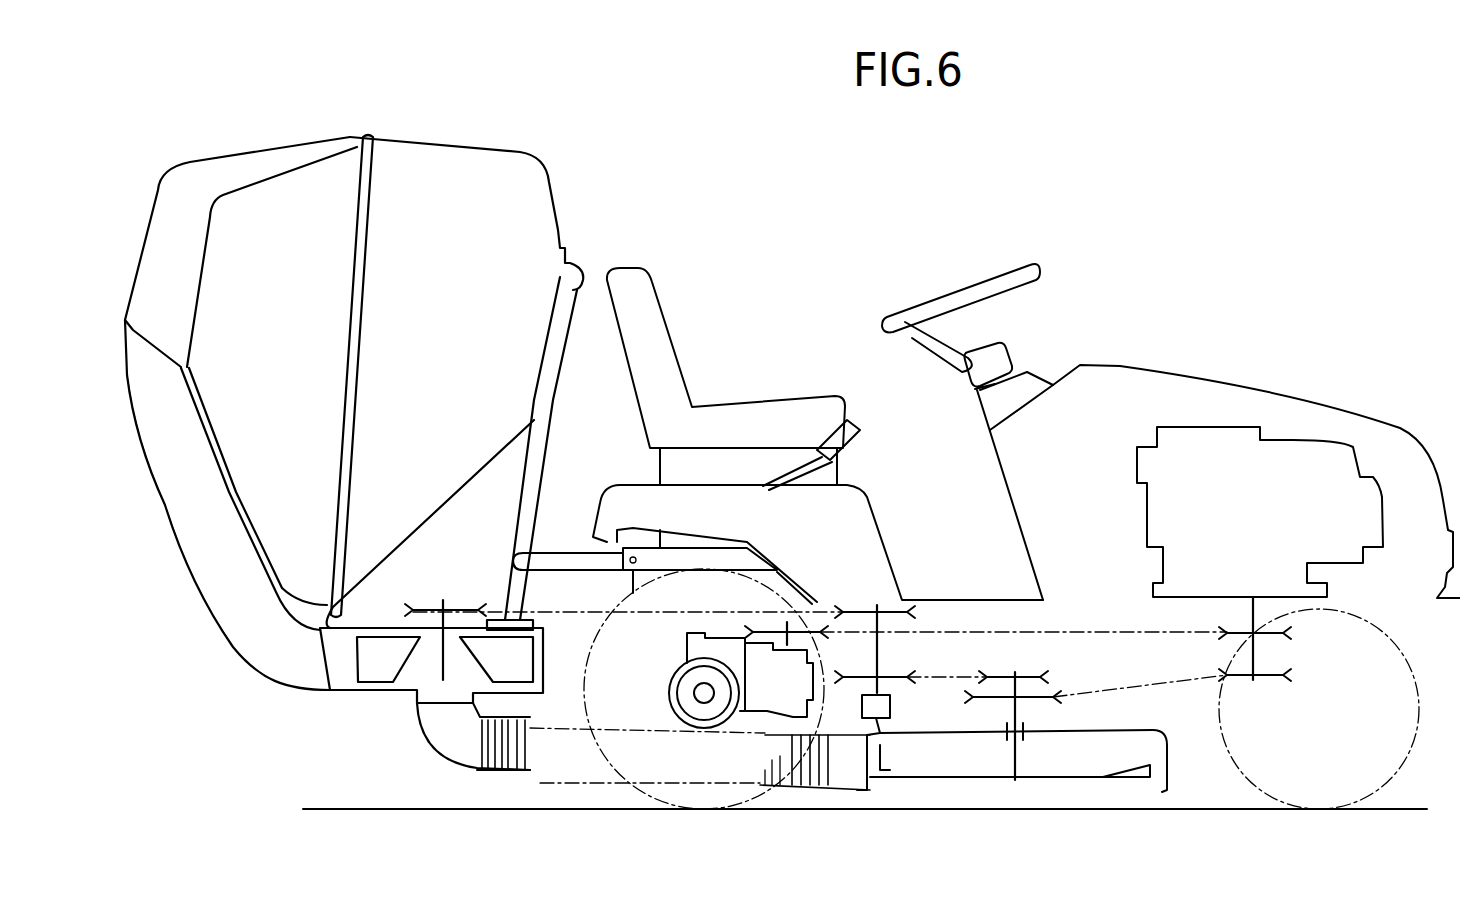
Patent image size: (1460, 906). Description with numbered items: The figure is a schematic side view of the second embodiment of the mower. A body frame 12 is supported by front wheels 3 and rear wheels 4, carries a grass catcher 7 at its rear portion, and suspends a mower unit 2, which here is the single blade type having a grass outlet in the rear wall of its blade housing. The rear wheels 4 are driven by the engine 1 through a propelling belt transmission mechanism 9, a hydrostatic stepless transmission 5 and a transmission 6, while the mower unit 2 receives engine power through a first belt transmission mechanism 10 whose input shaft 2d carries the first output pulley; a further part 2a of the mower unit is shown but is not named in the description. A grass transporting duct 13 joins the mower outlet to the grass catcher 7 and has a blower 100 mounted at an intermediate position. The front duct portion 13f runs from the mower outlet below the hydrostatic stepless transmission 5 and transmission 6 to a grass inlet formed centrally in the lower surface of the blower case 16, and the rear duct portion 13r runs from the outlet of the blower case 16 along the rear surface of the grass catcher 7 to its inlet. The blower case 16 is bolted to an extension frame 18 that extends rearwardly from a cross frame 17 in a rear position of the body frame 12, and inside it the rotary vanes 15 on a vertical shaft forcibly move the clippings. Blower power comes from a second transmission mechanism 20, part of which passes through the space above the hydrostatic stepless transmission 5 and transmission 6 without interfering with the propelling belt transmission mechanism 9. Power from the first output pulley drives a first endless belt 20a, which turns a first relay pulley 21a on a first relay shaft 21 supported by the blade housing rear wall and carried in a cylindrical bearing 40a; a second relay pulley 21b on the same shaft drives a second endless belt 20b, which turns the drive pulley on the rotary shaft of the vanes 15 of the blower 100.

The engine 1 is at (1307, 450).
The mower unit 2 is at (1087, 796).
The frame cross member 2a is at (1015, 752).
The input shaft 2d is at (1027, 677).
The front wheels 3 is at (1417, 737).
The rear wheels 4 is at (647, 790).
The hydrostatic stepless transmission 5 is at (760, 703).
The transmission 6 is at (670, 678).
The grass catcher 7 is at (543, 176).
The propelling belt transmission mechanism 9 is at (1109, 620).
The first belt transmission mechanism 10 is at (1184, 694).
The body frame 12 is at (863, 493).
The grass transporting duct 13 is at (498, 620).
The rear duct portion 13r is at (233, 647).
The front duct portion 13f is at (530, 773).
The rotary vanes 15 is at (357, 663).
The blower case 16 is at (393, 630).
The cross frame 17 is at (683, 548).
The extension frame 18 is at (512, 583).
The second transmission mechanism 20 is at (594, 589).
The first endless belt 20a is at (958, 675).
The second endless belt 20b is at (778, 560).
The first relay shaft 21 is at (867, 610).
The first relay pulley 21a is at (857, 680).
The second relay pulley 21b is at (893, 610).
The cylindrical bearing 40a is at (890, 705).
The blower 100 is at (384, 708).